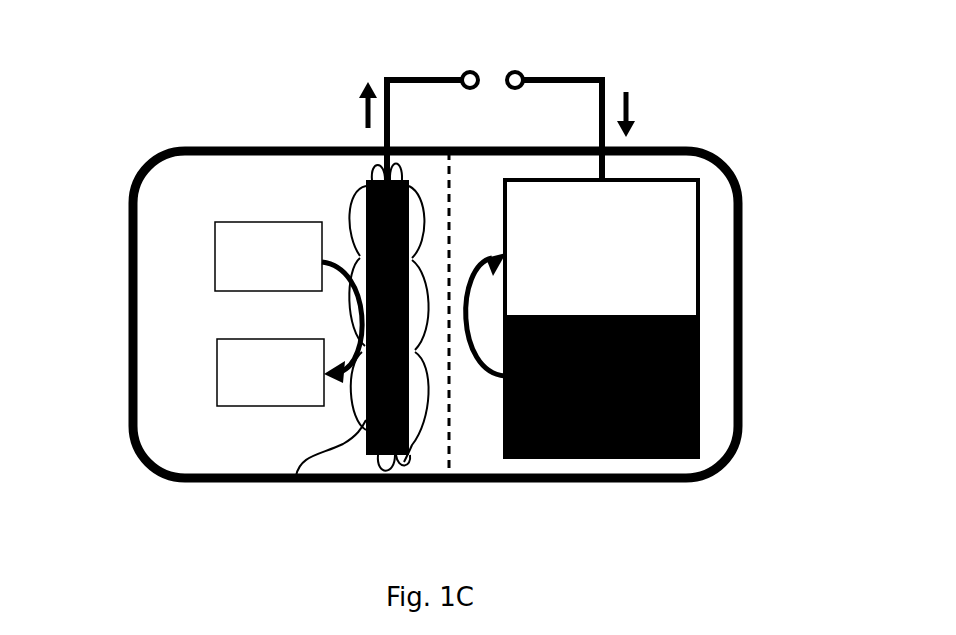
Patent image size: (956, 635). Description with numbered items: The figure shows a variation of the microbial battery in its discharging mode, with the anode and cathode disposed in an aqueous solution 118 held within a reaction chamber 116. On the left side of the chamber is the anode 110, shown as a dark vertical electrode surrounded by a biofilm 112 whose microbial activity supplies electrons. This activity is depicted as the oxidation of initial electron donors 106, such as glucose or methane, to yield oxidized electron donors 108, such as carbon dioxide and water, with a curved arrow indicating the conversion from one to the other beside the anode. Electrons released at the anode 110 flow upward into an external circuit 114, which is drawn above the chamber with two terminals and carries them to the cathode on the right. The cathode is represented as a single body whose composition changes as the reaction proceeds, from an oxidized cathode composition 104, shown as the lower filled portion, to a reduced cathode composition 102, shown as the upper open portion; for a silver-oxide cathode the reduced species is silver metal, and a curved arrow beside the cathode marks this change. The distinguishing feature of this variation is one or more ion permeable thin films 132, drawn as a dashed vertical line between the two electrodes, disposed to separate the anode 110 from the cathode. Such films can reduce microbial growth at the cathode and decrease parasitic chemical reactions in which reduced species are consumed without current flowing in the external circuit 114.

The reduced cathode composition 102 is at (579, 255).
The oxidized cathode composition 104 is at (579, 400).
The initial electron donors 106 is at (250, 269).
The oxidized electron donors 108 is at (251, 385).
The anode 110 is at (366, 185).
The biofilm 112 is at (296, 476).
The external circuit 114 is at (674, 105).
The reaction chamber 116 is at (146, 160).
The aqueous solution 118 is at (180, 348).
The ion permeable thin films 132 is at (449, 395).